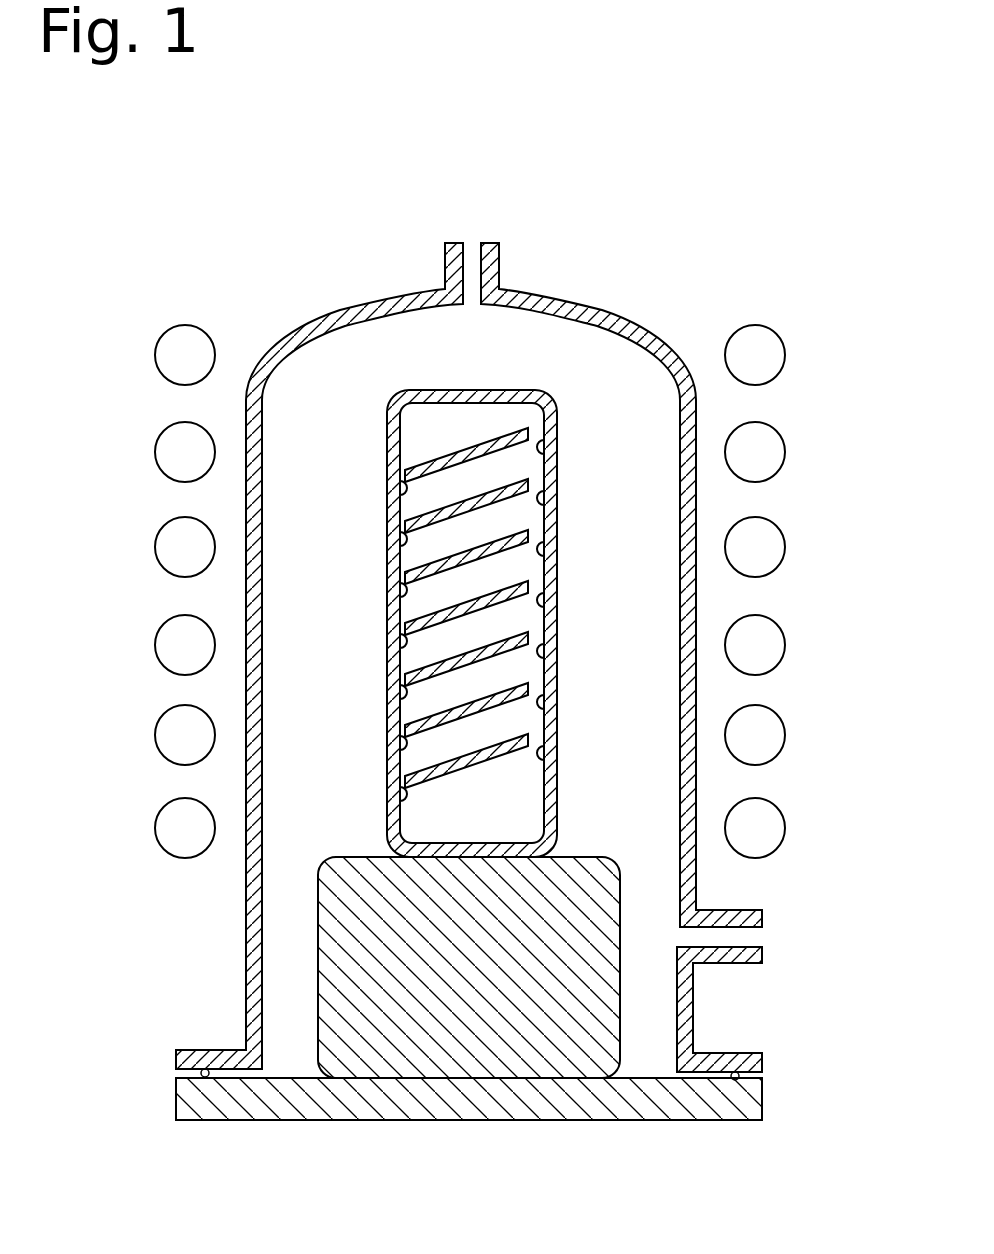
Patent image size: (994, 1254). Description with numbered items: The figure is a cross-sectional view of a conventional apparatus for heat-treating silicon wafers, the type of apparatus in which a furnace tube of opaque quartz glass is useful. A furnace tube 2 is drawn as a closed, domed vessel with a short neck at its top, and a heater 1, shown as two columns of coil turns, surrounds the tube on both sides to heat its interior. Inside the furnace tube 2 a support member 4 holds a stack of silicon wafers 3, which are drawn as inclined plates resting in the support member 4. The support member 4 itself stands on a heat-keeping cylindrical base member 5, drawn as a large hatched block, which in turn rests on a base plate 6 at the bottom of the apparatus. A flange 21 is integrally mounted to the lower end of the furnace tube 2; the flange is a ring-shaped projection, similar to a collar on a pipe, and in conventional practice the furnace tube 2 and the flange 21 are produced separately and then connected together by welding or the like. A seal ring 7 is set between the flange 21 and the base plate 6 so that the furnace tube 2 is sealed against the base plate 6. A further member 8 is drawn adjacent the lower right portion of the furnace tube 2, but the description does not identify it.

The heater 1 is at (785, 355).
The furnace tube 2 is at (580, 300).
The silicon wafer 3 is at (483, 442).
The support member 4 is at (557, 548).
The heat-keeping cylindrical base member 5 is at (567, 862).
The base plate 6 is at (548, 1120).
The seal ring 7 is at (203, 1068).
The bracket flange 8 is at (757, 945).
The flange 21 is at (760, 1055).